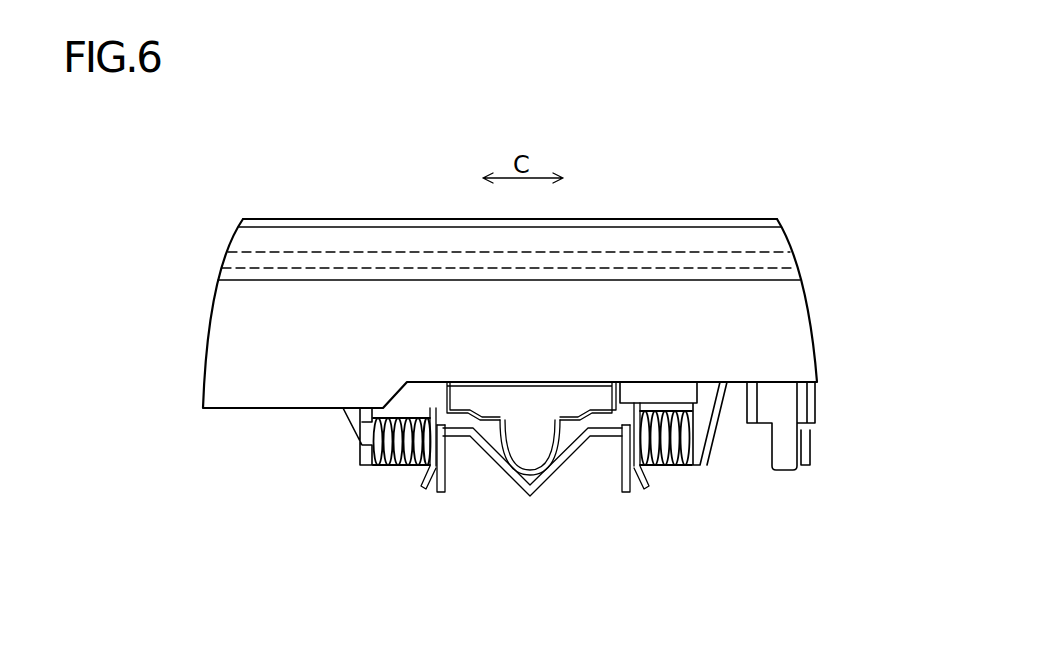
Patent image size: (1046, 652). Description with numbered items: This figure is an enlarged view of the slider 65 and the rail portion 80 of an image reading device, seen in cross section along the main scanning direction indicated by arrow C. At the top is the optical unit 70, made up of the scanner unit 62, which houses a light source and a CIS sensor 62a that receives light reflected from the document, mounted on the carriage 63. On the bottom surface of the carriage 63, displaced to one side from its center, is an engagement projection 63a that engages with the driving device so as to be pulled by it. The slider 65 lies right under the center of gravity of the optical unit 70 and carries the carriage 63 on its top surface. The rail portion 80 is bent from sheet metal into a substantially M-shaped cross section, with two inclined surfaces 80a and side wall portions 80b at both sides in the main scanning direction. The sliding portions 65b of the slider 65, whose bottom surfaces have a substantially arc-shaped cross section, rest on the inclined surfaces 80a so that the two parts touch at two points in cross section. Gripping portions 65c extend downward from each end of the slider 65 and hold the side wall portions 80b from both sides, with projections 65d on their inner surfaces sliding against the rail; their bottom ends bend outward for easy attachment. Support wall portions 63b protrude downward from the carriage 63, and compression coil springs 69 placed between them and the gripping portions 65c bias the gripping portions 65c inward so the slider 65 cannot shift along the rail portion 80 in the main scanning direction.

The optical unit 70 is at (838, 176).
The scanner unit 62 is at (772, 242).
The CIS sensor 62a is at (783, 262).
The carriage 63 is at (795, 328).
The engagement projection 63a is at (778, 468).
The support wall portions 63b is at (358, 440).
The slider 65 is at (523, 400).
The sliding portions 65b is at (522, 455).
The gripping portions 65c is at (421, 482).
The projections 65d is at (438, 492).
The compression coil springs 69 is at (396, 465).
The rail portion 80 is at (603, 440).
The inclined surfaces 80a is at (505, 448).
The side wall portions 80b is at (441, 488).